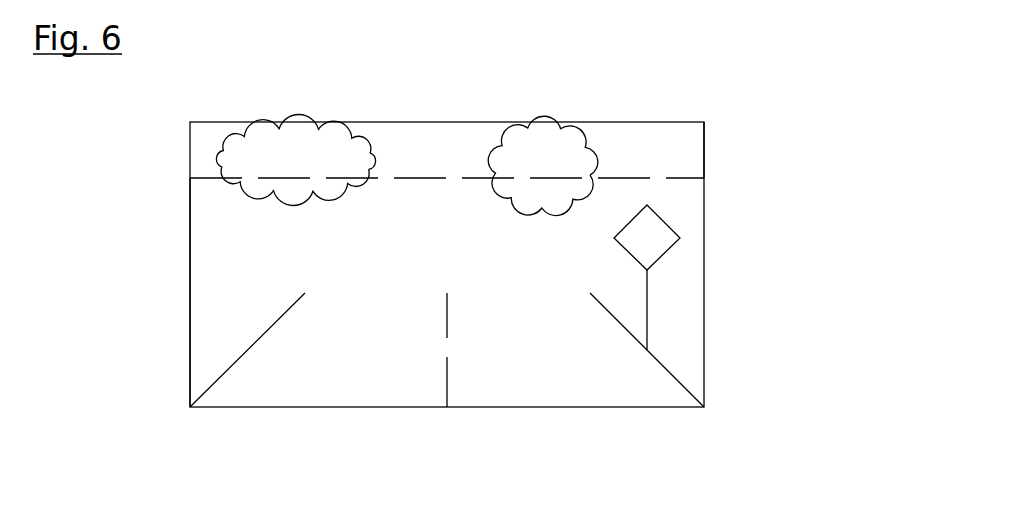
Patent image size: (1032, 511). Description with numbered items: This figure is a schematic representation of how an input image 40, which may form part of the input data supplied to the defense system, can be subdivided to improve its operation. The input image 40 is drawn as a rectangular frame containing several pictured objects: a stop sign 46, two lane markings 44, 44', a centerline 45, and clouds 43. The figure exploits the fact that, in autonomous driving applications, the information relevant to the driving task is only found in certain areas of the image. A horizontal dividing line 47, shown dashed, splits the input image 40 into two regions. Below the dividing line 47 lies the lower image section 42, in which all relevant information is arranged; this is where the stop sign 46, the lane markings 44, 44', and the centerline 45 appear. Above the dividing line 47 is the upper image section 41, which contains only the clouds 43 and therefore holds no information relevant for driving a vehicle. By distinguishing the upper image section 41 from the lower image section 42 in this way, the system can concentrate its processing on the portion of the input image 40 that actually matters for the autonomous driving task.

The input image 40 is at (725, 263).
The upper image section 41 is at (724, 148).
The lower image section 42 is at (172, 265).
The clouds 43 is at (614, 157).
The lane marking 44 is at (176, 350).
The lane marking 44' is at (637, 388).
The centerline 45 is at (432, 370).
The stop sign 46 is at (604, 254).
The dividing line 47 is at (172, 178).